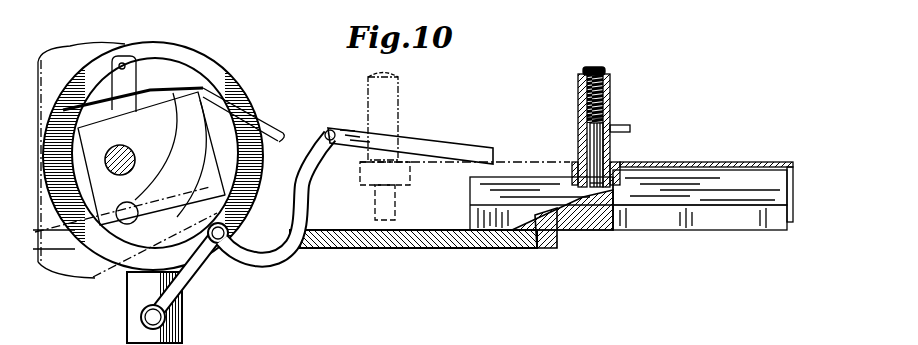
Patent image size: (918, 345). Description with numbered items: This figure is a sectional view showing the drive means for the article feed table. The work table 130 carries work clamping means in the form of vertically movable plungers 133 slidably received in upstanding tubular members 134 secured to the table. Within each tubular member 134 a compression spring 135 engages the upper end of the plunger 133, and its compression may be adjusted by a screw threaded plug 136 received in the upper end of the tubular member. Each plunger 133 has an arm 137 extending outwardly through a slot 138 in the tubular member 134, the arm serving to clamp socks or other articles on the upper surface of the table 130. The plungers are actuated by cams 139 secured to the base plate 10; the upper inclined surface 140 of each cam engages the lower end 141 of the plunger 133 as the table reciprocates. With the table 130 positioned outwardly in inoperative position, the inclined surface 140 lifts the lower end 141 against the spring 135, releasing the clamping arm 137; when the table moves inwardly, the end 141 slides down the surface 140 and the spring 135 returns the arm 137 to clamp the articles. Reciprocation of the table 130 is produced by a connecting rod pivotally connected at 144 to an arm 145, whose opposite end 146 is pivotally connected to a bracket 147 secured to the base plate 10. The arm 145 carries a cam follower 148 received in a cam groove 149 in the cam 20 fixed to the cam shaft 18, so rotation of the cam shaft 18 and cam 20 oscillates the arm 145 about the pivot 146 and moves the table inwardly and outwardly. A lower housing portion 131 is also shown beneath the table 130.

The base plate 10 is at (425, 247).
The cam shaft 18 is at (117, 148).
The cam 20 is at (210, 57).
The work table 130 is at (543, 143).
The lower housing portion 131 is at (688, 223).
The plunger 133 is at (585, 134).
The tubular member 134 is at (398, 113).
The compression spring 135 is at (608, 105).
The screw threaded plug 136 is at (393, 72).
The clamping arm 137 is at (415, 143).
The slot 138 is at (610, 118).
The cam 139 is at (578, 227).
The inclined surface 140 is at (543, 212).
The lower end of plunger 141 is at (377, 222).
The pivotal connection 144 is at (357, 125).
The arm 145 is at (282, 250).
The pivot end of arm 146 is at (160, 317).
The bracket 147 is at (182, 336).
The cam follower 148 is at (215, 243).
The cam groove 149 is at (223, 88).